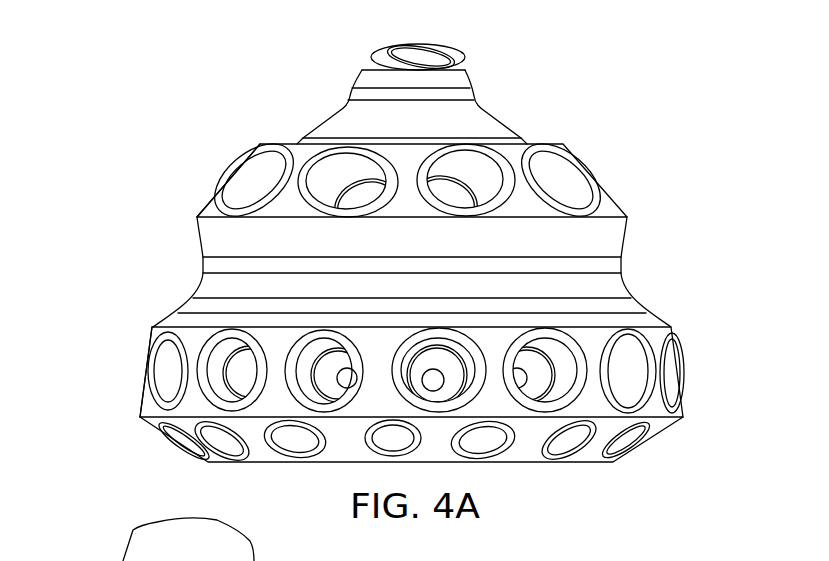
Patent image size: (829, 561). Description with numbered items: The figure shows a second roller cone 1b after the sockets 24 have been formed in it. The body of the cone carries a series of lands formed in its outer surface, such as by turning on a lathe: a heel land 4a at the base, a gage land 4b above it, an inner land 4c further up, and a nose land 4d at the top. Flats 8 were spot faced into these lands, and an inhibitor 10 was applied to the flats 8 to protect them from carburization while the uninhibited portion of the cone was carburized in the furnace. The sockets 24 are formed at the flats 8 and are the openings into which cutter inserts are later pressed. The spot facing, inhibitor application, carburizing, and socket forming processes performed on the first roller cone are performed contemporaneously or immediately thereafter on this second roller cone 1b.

The second roller cone 1b is at (95, 79).
The nose land 4d is at (372, 62).
The inner land 4c is at (610, 206).
The sockets 24 is at (492, 180).
The flats 8 is at (218, 206).
The inhibitor 10 is at (152, 326).
The gage land 4b is at (652, 336).
The heel land 4a is at (582, 455).